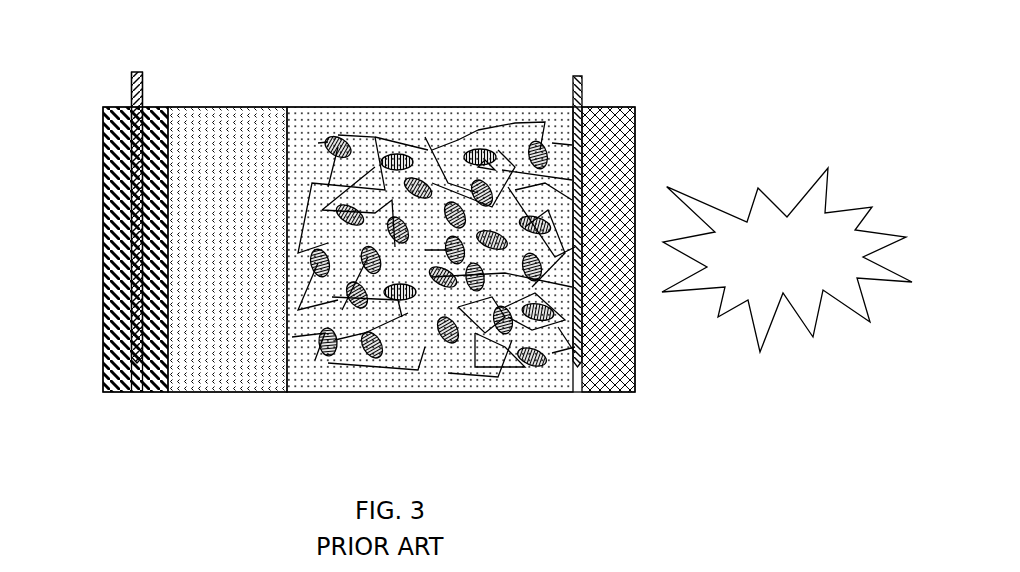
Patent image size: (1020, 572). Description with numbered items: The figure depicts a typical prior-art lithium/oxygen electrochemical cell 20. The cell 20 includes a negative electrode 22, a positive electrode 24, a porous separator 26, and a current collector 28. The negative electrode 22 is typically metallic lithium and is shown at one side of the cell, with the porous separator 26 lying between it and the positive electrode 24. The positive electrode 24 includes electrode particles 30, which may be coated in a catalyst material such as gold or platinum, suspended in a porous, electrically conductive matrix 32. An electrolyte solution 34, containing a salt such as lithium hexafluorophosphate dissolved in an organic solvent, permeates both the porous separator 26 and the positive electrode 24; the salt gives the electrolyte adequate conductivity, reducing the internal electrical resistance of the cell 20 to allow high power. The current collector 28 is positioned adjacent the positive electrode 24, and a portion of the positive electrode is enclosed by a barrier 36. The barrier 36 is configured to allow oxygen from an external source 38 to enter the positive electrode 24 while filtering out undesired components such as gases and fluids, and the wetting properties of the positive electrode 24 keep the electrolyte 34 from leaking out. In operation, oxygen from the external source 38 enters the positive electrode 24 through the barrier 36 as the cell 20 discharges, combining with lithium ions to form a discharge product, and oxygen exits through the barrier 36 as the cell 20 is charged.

The lithium/oxygen electrochemical cell 20 is at (143, 46).
The negative electrode 22 is at (103, 203).
The positive electrode 24 is at (442, 252).
The porous separator 26 is at (213, 393).
The current collector 28 is at (582, 82).
The electrode particles 30 is at (334, 136).
The porous, electrically conductive matrix 32 is at (432, 140).
The electrolyte solution 34 is at (423, 377).
The barrier 36 is at (635, 113).
The external source 38 is at (828, 183).